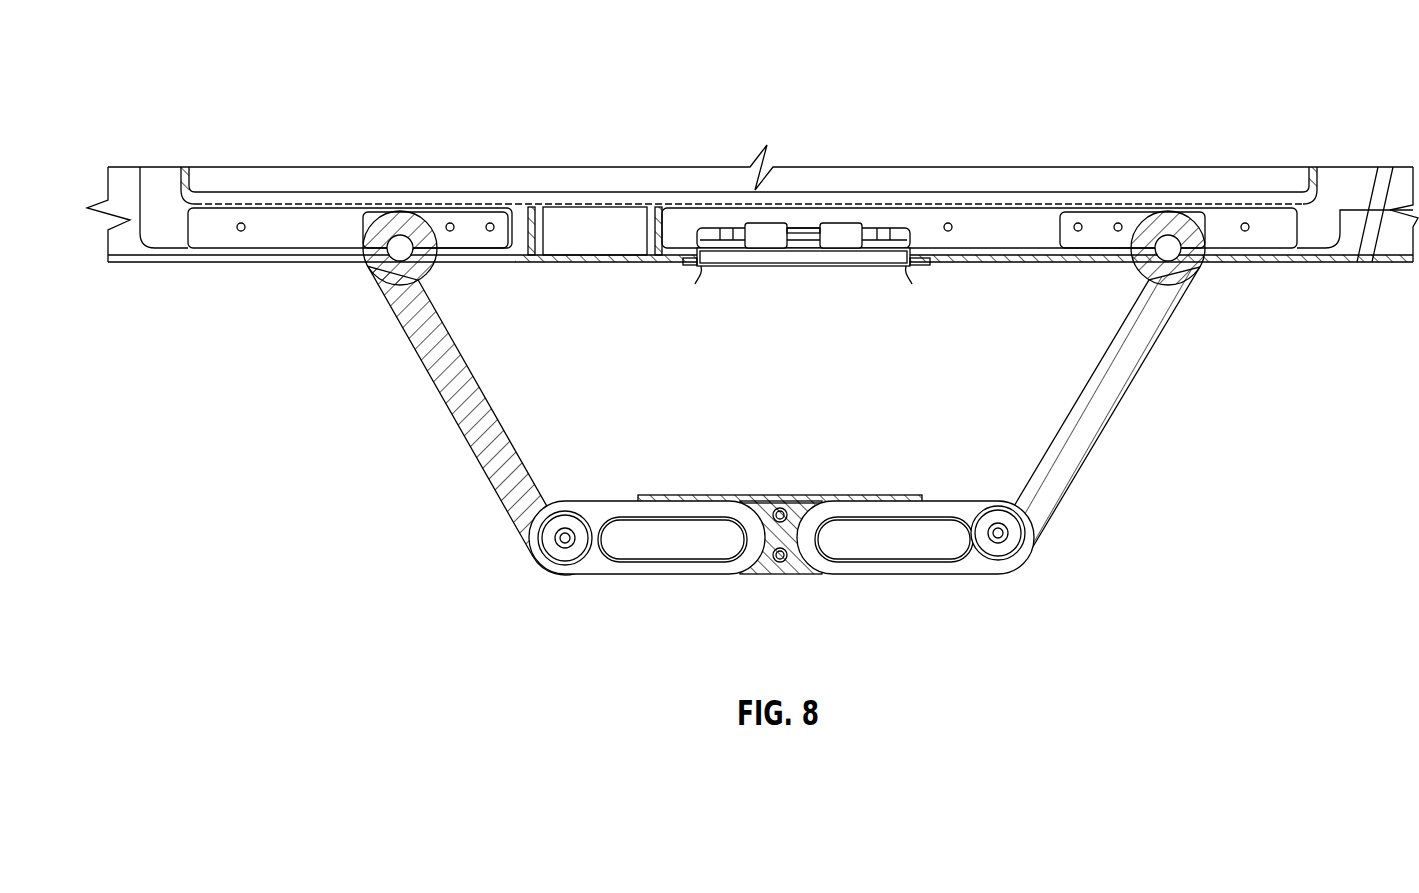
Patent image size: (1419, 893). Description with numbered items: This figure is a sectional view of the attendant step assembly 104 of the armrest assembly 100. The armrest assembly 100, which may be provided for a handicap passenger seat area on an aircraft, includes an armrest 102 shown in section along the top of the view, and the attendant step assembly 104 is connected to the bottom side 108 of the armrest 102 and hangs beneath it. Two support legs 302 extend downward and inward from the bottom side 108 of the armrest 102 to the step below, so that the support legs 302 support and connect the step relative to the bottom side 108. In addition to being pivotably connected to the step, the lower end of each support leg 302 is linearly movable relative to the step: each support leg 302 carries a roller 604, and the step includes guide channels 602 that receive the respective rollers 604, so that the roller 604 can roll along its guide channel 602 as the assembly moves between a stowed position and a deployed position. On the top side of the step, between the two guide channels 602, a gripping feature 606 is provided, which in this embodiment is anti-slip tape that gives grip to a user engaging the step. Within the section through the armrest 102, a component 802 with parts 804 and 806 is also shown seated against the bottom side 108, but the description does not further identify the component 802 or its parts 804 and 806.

The armrest assembly 100 is at (742, 355).
The armrest 102 is at (158, 225).
The attendant step assembly 104 is at (720, 427).
The bottom side 108 is at (218, 288).
The support leg 302 is at (485, 453).
The guide channel 602 is at (687, 553).
The roller 604 is at (555, 575).
The gripping feature 606 is at (905, 495).
The connector assembly 802 is at (811, 306).
The connector clip 804 is at (697, 280).
The connector clip 806 is at (912, 280).